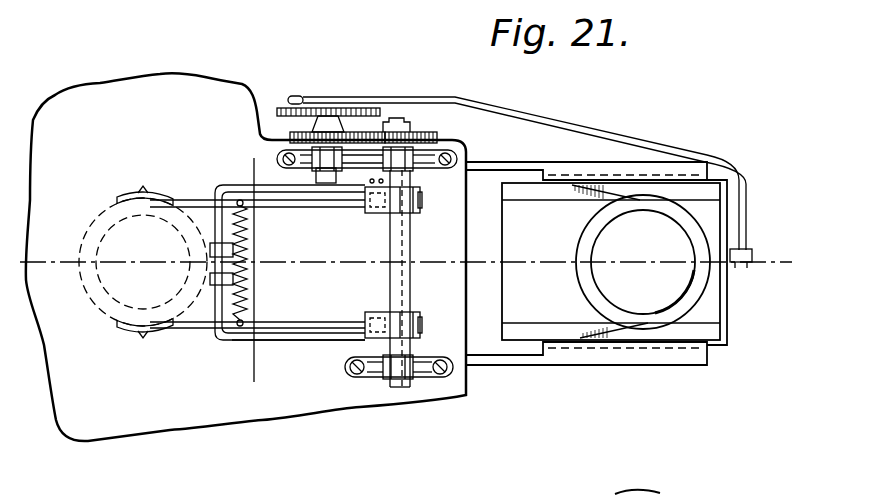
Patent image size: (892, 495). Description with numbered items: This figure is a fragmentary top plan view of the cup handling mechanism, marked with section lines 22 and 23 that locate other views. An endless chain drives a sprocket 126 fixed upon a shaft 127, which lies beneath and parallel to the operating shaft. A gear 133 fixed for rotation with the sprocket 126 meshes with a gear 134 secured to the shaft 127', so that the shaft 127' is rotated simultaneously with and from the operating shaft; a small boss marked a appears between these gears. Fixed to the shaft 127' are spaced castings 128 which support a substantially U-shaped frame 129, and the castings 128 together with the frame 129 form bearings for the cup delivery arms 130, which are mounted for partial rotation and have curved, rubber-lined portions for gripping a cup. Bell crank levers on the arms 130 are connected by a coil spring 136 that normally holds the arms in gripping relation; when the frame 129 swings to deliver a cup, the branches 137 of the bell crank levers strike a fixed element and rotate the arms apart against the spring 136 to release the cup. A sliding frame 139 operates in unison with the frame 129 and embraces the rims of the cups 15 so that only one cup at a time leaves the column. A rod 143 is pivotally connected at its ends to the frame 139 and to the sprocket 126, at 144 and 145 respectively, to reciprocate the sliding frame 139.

The cups 15 is at (113, 318).
The section line 22 is at (66, 258).
The section line 23 is at (264, 173).
The sprocket 126 is at (343, 117).
The shaft 127 is at (331, 205).
The shaft 127' is at (421, 278).
The castings 128 is at (408, 318).
The U-shaped frame 129 is at (292, 342).
The cup delivery arms 130 is at (285, 203).
The gear 133 is at (284, 106).
The gear 134 is at (424, 132).
The coil spring 136 is at (248, 273).
The bell crank lever branches 137 is at (230, 218).
The sliding frame 139 is at (522, 185).
The rod 143 is at (653, 143).
The pivotal connection 144 is at (753, 251).
The pivotal connection 145 is at (299, 96).
The boss a is at (327, 126).